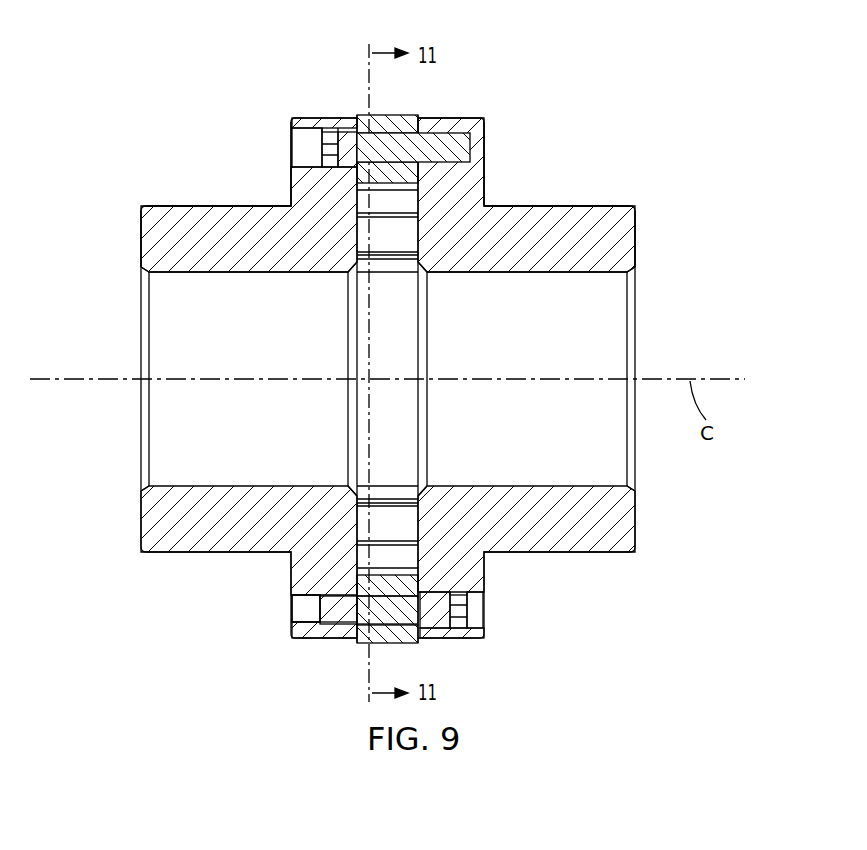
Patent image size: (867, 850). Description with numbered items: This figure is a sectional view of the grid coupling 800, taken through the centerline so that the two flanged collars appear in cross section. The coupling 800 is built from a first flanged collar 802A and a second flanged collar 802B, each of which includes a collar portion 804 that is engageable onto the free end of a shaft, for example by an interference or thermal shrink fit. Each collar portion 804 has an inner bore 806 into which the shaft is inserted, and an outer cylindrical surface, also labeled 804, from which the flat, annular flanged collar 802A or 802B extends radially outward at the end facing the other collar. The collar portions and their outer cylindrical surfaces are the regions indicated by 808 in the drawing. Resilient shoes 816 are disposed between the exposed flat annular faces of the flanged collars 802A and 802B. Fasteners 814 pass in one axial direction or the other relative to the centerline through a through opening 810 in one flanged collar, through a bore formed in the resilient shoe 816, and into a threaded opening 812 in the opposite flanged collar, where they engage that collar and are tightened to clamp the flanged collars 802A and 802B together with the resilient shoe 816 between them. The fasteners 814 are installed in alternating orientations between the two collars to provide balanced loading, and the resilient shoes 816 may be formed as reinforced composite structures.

The coupling 800 is at (662, 151).
The first flanged collar 802A is at (305, 561).
The second flanged collar 802B is at (470, 561).
The collar portion 804 is at (155, 236).
The inner bore 806 is at (197, 272).
The hub body 808 is at (196, 205).
The through opening 810 is at (477, 615).
The threaded opening 812 is at (300, 613).
The fastener 814 is at (438, 148).
The resilient shoe 816 is at (383, 124).